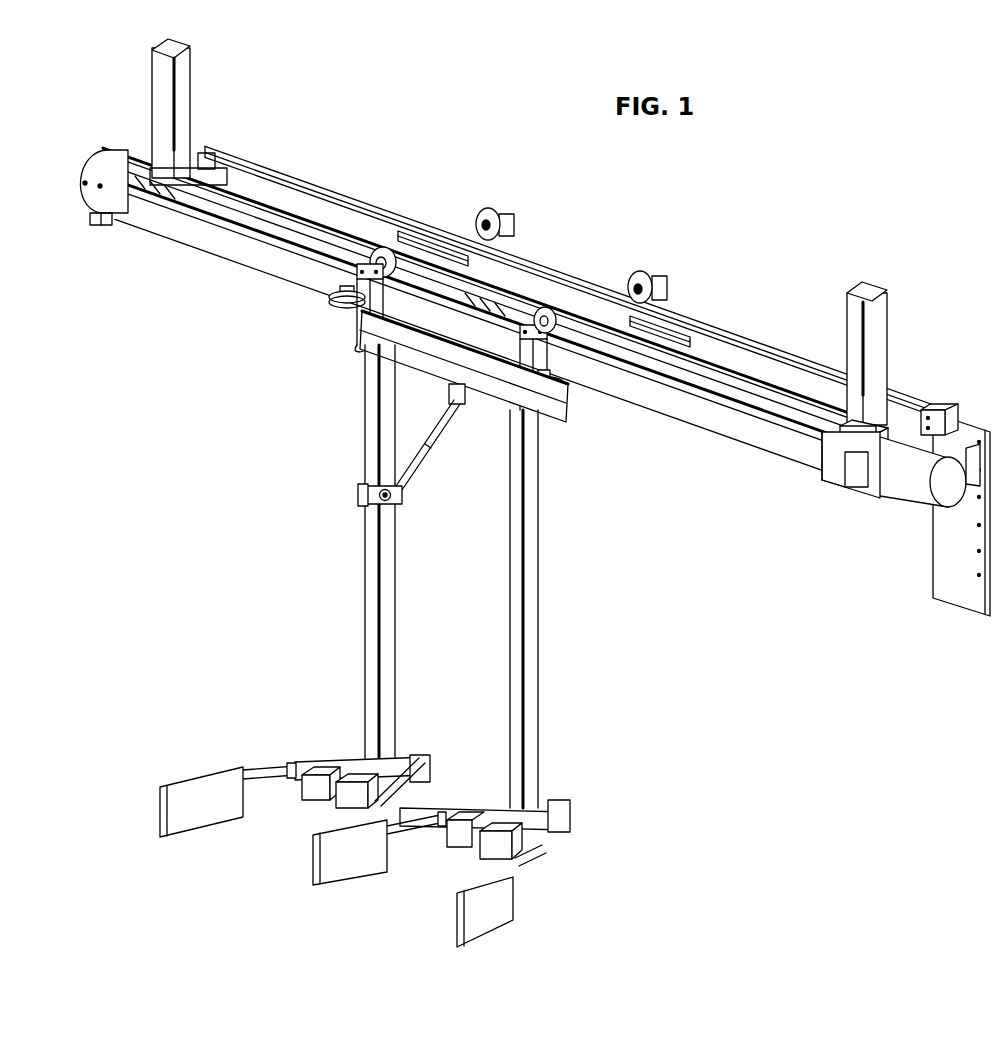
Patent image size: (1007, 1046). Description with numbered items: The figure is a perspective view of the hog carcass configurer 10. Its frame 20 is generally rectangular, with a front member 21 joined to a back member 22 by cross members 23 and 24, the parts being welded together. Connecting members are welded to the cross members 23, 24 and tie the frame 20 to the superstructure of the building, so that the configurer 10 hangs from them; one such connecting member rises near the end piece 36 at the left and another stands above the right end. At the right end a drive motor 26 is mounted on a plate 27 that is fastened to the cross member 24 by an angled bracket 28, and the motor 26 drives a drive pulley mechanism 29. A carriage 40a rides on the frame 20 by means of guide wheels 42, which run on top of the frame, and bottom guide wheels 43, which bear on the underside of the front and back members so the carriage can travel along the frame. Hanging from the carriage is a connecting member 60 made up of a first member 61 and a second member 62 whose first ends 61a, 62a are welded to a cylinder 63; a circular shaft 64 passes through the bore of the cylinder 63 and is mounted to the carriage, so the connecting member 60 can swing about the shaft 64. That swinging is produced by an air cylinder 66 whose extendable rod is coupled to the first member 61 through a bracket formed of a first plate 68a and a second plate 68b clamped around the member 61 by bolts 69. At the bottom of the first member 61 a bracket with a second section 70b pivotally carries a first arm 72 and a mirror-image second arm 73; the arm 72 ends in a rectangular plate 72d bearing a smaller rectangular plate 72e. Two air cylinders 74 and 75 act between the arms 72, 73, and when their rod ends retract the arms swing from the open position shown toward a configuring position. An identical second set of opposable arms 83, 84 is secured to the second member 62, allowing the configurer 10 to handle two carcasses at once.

The hog carcass configurer 10 is at (769, 286).
The frame 20 is at (318, 184).
The front member 21 is at (241, 255).
The back member 22 is at (352, 217).
The cross member 23 is at (209, 165).
The cross member 24 is at (897, 410).
The drive motor 26 is at (913, 492).
The plate 27 is at (950, 583).
The angled bracket 28 is at (946, 416).
The drive pulley mechanism 29 is at (840, 462).
The end cap 36 is at (85, 196).
The carriage 40a is at (447, 536).
The guide wheel 42 is at (385, 255).
The bottom guide wheel 43 is at (553, 390).
The connecting member 60 is at (394, 474).
The first member 61 is at (391, 611).
The first end 61a is at (372, 378).
The second member 62 is at (537, 601).
The first end 62a is at (540, 432).
The cylinder 63 is at (428, 376).
The circular shaft 64 is at (550, 418).
The air cylinder 66 is at (466, 408).
The first plate 68a is at (375, 507).
The second plate 68b is at (364, 488).
The bolts 69 is at (363, 503).
The second section 70b is at (428, 762).
The first arm 72 is at (239, 775).
The rectangular plate 72d is at (203, 777).
The smaller rectangular plate 72e is at (165, 786).
The second arm 73 is at (406, 786).
The air cylinder 74 is at (317, 786).
The air cylinder 75 is at (352, 803).
The opposable arm 83 is at (406, 836).
The opposable arm 84 is at (537, 864).